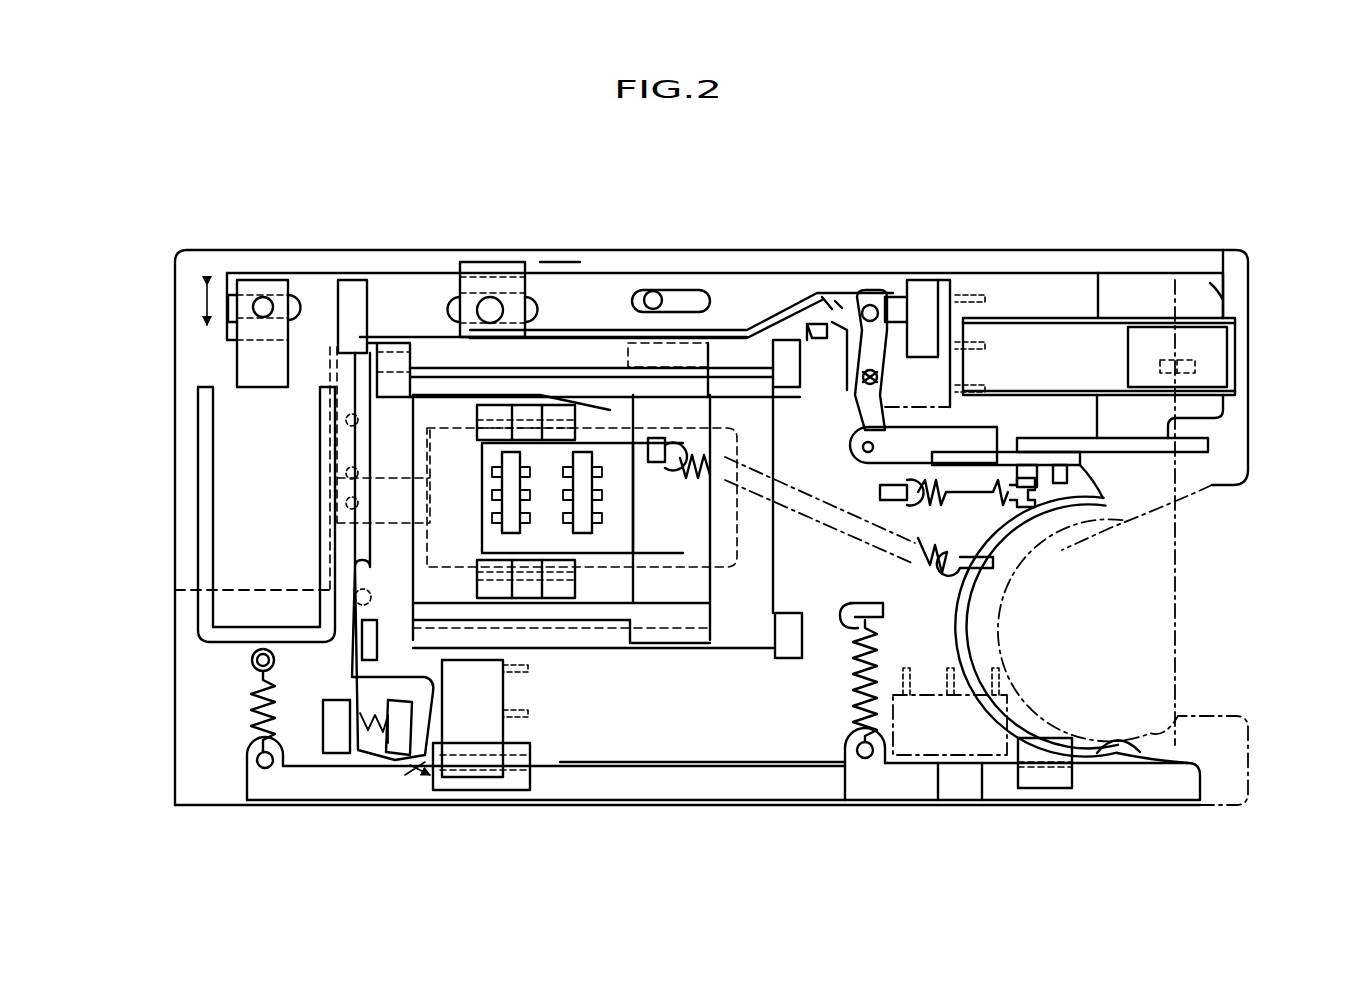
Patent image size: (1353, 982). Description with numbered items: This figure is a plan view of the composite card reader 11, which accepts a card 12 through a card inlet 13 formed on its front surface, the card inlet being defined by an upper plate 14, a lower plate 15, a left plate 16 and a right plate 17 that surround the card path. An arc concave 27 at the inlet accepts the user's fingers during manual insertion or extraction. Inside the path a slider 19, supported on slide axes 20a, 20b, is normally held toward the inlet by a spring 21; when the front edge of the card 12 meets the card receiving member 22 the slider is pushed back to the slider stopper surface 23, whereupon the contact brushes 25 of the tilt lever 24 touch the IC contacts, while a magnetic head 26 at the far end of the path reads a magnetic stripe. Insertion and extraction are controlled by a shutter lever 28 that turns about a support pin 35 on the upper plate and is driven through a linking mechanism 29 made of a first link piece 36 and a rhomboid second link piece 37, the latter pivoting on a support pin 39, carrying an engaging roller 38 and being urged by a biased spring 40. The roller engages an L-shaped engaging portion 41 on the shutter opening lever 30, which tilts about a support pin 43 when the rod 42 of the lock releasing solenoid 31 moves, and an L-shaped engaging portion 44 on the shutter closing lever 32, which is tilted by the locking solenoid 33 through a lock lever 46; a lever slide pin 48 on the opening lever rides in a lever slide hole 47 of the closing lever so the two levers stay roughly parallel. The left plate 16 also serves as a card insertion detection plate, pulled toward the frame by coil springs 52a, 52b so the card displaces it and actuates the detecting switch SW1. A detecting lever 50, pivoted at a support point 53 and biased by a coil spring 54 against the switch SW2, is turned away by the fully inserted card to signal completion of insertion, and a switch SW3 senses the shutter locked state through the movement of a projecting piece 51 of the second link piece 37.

The composite card reader 11 is at (1028, 168).
The card 12 is at (1180, 568).
The card inlet 13 is at (1178, 657).
The upper plate 14 is at (1098, 290).
The lower plate 15 is at (1195, 290).
The left plate 16 is at (1100, 788).
The right plate 17 is at (1040, 262).
The slider 19 is at (725, 337).
The slide axis 20a is at (622, 258).
The slide axis 20b is at (582, 655).
The spring 21 is at (942, 575).
The card receiving member 22 is at (418, 330).
The slider stopper surface 23 is at (360, 300).
The tilt lever 24 is at (600, 548).
The contact brushes 25 is at (475, 525).
The magnetic head 26 is at (1212, 340).
The arc concave 27 is at (1135, 795).
The shutter lever 28 is at (1200, 445).
The linking mechanism 29 is at (1008, 410).
The shutter opening lever 30 is at (540, 255).
The lock releasing solenoid 31 is at (213, 512).
The shutter closing lever 32 is at (630, 258).
The locking solenoid 33 is at (745, 530).
The support pin 35 is at (1215, 498).
The first link piece 36 is at (888, 460).
The second link piece 37 is at (858, 442).
The engaging roller 38 is at (832, 320).
The support pin 39 is at (858, 378).
The biased spring 40 is at (950, 508).
The L-shaped engaging portion 41 is at (880, 282).
The rod 42 is at (260, 320).
The support pin 43 is at (480, 300).
The L-shaped engaging portion 44 is at (903, 347).
The lock lever 46 is at (372, 462).
The lever slide hole 47 is at (560, 300).
The lever slide pin 48 is at (665, 292).
The detecting lever 50 is at (365, 758).
The projecting piece 51 is at (822, 340).
The coil spring 52a is at (855, 690).
The coil spring 52b is at (250, 698).
The support point 53 is at (215, 590).
The coil spring 54 is at (350, 805).
The detecting switch SW1 is at (900, 757).
The switch SW2 is at (480, 775).
The shutter lock detecting switch SW3 is at (942, 290).